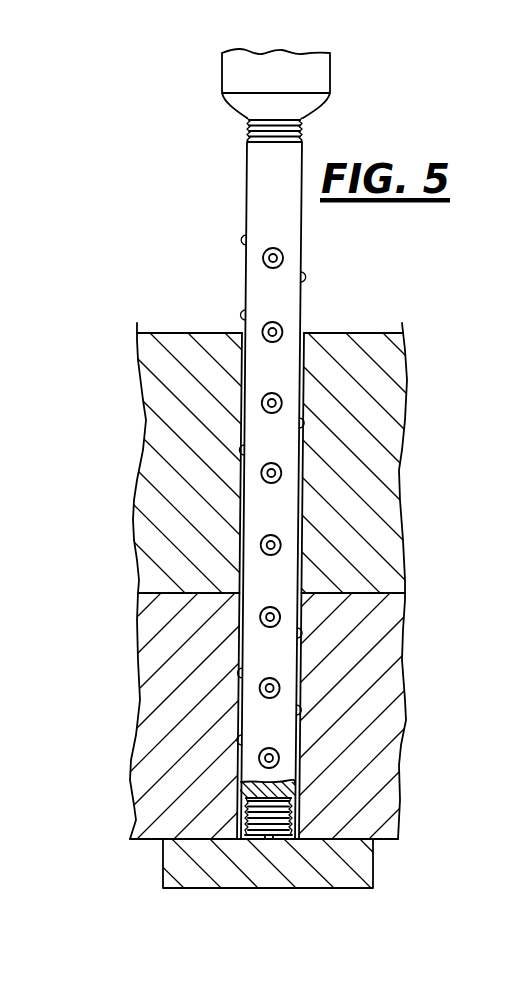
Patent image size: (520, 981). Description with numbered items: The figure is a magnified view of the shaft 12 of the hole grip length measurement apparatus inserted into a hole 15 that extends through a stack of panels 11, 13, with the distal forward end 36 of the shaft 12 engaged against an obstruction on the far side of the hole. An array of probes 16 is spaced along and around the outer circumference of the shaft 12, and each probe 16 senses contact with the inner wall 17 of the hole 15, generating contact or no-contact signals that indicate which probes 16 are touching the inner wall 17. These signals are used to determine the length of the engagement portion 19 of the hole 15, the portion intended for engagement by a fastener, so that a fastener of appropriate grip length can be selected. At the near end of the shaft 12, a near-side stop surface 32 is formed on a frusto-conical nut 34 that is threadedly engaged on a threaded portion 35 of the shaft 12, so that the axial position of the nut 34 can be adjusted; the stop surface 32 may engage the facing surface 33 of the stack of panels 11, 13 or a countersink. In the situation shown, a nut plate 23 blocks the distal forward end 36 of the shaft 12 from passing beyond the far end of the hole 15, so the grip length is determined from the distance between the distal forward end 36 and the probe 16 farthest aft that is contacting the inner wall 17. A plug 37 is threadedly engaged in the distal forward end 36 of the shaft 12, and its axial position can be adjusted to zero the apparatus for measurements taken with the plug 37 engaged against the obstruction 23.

The panel 11 is at (360, 492).
The shaft 12 is at (283, 217).
The panel 13 is at (377, 697).
The hole 15 is at (377, 586).
The probes 16 is at (230, 444).
The inner wall 17 is at (377, 586).
The engagement portion 19 is at (291, 748).
The nut plate 23 is at (348, 870).
The near-side stop surface 32 is at (237, 98).
The facing surface 33 is at (332, 332).
The frusto-conical nut 34 is at (237, 104).
The threaded portion 35 is at (298, 128).
The distal forward end 36 is at (258, 841).
The plug 37 is at (235, 804).